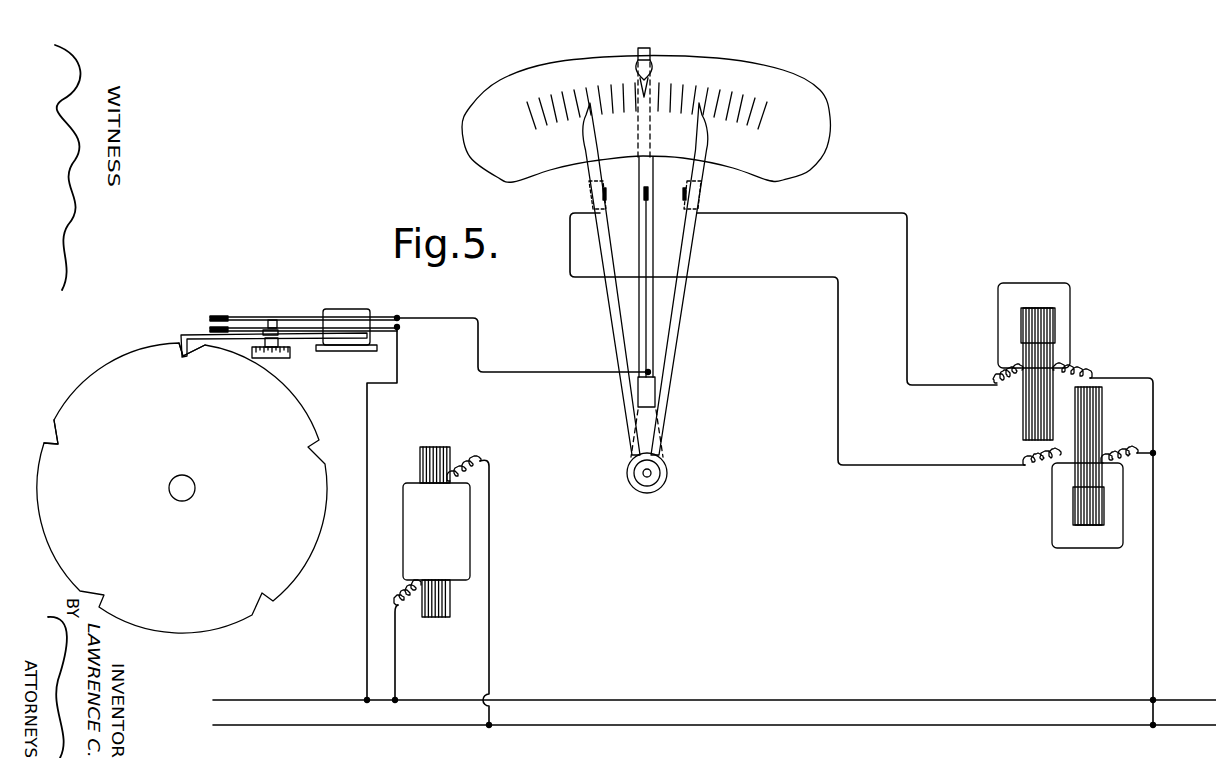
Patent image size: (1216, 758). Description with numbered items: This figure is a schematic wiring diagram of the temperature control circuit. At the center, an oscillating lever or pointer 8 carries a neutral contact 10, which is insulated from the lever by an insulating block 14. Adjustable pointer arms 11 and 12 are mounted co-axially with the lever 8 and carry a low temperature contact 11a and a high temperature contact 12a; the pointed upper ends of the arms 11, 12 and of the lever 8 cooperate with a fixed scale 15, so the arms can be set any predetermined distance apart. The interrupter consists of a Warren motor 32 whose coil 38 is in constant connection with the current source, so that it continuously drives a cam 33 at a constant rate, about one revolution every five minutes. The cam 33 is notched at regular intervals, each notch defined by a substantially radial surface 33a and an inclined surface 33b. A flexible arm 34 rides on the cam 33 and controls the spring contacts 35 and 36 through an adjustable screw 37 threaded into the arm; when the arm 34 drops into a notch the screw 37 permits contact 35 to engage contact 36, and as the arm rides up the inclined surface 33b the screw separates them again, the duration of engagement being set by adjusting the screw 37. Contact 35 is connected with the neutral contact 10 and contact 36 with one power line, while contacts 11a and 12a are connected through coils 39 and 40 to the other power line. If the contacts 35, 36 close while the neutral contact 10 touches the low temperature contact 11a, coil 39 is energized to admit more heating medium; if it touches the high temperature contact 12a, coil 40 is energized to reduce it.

The oscillating lever or pointer 8 is at (652, 55).
The neutral contact 10 is at (643, 194).
The adjustable pointer arm 11 is at (613, 310).
The low temperature contact 11a is at (619, 179).
The adjustable pointer arm 12 is at (680, 311).
The high temperature contact 12a is at (686, 191).
The insulating block 14 is at (647, 390).
The fixed scale 15 is at (817, 127).
The Warren motor 32 is at (435, 519).
The cam 33 is at (201, 631).
The radial surface 33a is at (50, 448).
The inclined surface 33b is at (192, 354).
The flexible arm 34 is at (191, 337).
The spring contact 35 is at (217, 317).
The spring contact 36 is at (211, 328).
The adjustable screw 37 is at (284, 354).
The coil 38 is at (460, 528).
The coil 39 is at (1060, 535).
The coil 40 is at (1063, 297).